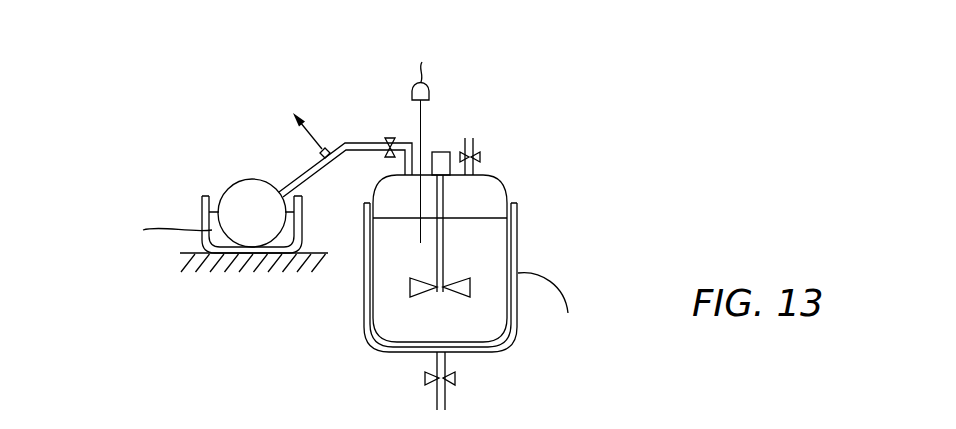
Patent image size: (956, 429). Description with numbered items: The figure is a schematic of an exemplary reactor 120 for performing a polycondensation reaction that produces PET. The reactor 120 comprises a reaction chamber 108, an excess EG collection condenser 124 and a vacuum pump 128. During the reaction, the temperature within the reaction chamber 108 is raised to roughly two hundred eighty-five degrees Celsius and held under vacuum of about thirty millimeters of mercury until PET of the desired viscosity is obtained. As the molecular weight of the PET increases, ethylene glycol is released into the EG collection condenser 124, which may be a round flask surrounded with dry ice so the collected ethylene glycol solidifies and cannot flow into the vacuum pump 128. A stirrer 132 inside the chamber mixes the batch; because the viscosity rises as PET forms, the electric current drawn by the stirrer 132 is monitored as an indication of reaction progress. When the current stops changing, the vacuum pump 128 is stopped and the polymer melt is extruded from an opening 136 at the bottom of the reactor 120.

The reactor 120 is at (672, 166).
The excess EG collection condenser 124 is at (237, 182).
The vacuum pump 128 is at (278, 120).
The reaction chamber 108 is at (503, 188).
The stirrer 132 is at (410, 288).
The opening 136 is at (427, 378).